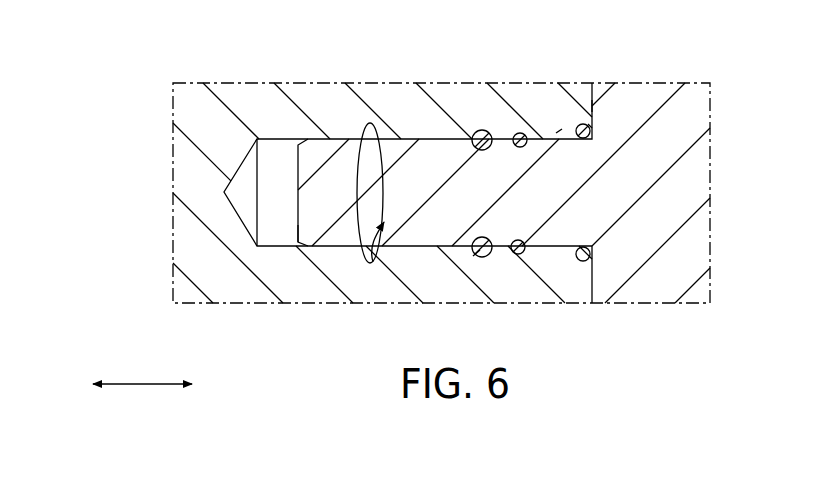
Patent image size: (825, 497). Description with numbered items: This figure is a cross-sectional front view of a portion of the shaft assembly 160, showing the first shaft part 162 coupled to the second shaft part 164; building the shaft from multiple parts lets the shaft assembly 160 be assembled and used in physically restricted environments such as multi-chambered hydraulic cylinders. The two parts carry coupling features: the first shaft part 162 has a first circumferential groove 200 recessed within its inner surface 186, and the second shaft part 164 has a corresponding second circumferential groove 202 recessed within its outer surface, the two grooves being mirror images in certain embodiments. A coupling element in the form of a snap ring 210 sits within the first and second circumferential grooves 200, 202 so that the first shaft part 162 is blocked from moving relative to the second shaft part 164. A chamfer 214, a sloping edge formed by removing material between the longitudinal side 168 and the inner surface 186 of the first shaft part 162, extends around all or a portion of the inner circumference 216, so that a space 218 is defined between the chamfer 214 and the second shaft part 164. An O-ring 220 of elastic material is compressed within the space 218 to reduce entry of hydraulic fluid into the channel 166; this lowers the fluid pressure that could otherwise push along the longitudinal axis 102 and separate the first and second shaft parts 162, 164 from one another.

The longitudinal axis 102 is at (145, 383).
The shaft assembly 160 is at (732, 126).
The first shaft part 162 is at (194, 308).
The second shaft part 164 is at (683, 317).
The channel 166 is at (290, 236).
The longitudinal side 168 is at (592, 106).
The inner surface 186 is at (246, 217).
The first circumferential groove 200 is at (488, 256).
The second circumferential groove 202 is at (474, 132).
The snap ring 210 is at (470, 257).
The chamfer 214 is at (558, 131).
The inner circumference 216 is at (383, 160).
The space 218 is at (590, 121).
The O-ring 220 is at (577, 127).